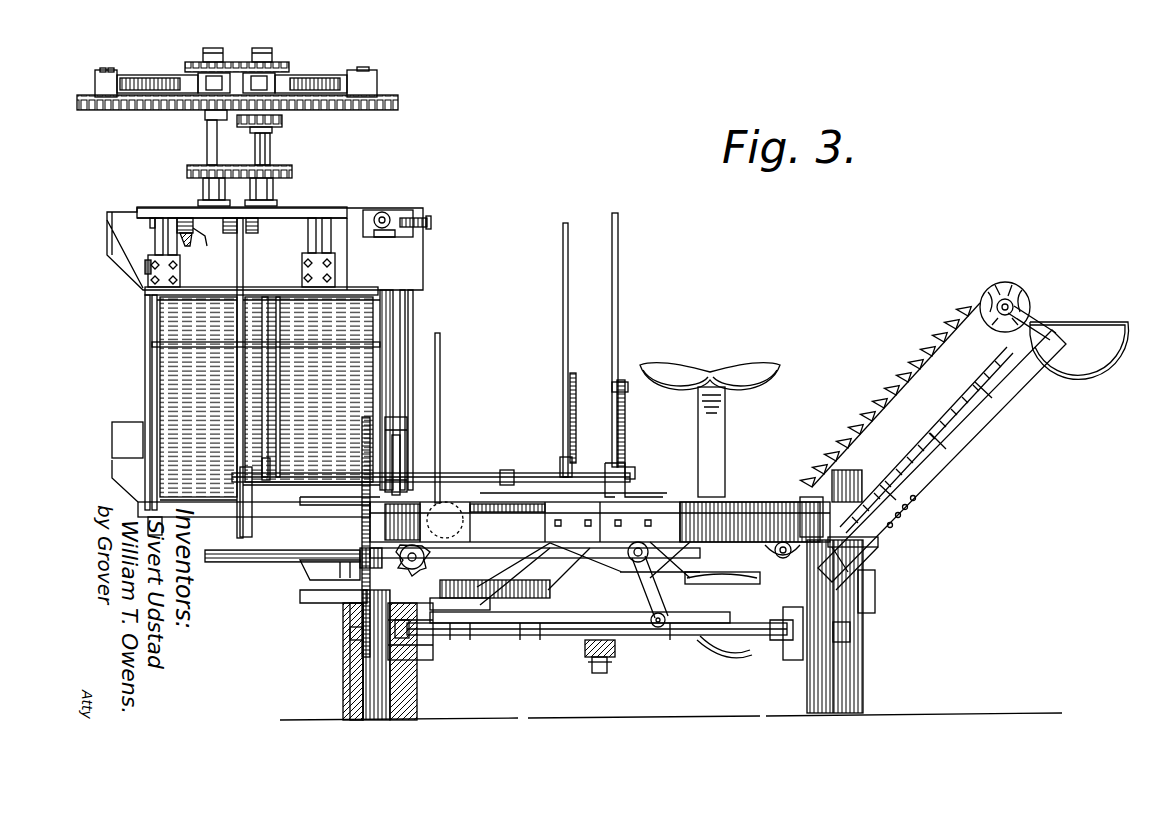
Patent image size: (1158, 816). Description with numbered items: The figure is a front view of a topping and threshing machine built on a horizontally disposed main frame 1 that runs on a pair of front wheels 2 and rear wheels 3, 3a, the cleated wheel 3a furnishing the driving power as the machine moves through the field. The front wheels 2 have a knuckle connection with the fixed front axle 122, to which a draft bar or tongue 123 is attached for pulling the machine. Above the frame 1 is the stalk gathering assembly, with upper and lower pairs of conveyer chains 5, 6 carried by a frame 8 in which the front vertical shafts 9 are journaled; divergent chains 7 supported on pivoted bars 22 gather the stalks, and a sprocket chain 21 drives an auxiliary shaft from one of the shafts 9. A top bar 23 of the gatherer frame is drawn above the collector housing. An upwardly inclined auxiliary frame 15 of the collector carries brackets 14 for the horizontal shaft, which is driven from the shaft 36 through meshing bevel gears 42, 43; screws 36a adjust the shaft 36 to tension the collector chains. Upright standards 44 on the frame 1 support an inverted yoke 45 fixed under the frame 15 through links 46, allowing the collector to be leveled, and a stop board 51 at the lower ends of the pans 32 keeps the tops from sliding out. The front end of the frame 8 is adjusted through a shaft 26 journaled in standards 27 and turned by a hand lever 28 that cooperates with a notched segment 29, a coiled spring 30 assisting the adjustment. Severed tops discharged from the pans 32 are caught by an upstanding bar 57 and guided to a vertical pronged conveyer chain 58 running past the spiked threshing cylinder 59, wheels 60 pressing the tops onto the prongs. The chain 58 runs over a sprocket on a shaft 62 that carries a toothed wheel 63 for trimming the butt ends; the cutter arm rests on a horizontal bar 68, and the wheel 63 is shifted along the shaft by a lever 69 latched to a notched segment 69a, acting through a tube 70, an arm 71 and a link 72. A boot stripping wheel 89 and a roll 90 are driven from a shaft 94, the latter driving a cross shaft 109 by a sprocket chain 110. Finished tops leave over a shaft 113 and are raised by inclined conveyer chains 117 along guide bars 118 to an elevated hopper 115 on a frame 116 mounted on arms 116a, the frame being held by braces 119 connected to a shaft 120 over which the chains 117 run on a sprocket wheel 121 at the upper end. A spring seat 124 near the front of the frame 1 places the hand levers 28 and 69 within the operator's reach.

The main frame 1 is at (731, 502).
The front wheels 2 is at (417, 688).
The rear wheel 3 is at (863, 677).
The cleated driving wheel 3a is at (343, 694).
The upper conveyer chains 5 is at (200, 61).
The lower conveyer chains 6 is at (187, 173).
The divergent conveyer chains 7 is at (140, 111).
The frame 8 is at (200, 144).
The front vertical shafts 9 is at (213, 49).
The brackets 14 is at (149, 263).
The auxiliary frame 15 is at (423, 266).
The sprocket chain 21 is at (282, 124).
The bars 22 is at (161, 66).
The top bar 23 is at (166, 208).
The horizontal shaft 26 is at (630, 471).
The upright standards 27 is at (270, 466).
The hand lever 28 is at (618, 312).
The notched segment 29 is at (626, 421).
The coiled spring 30 is at (360, 432).
The pans 32 is at (413, 311).
The shaft 36 is at (390, 211).
The screws 36a is at (431, 223).
The bevel gear 42 is at (190, 244).
The bevel gear 43 is at (193, 229).
The upright standards 44 is at (374, 390).
The inverted yoke 45 is at (316, 343).
The links 46 is at (378, 367).
The stop board 51 is at (120, 438).
The upstanding bar 57 is at (441, 351).
The conveyer chain 58 is at (546, 548).
The threshing cylinder 59 is at (549, 628).
The wheels 60 is at (470, 474).
The shaft 62 is at (362, 550).
The toothed wheel 63 is at (405, 568).
The horizontal bar 68 is at (448, 590).
The lever 69 is at (563, 302).
The notched segment 69a is at (577, 386).
The tube 70 is at (515, 474).
The arm 71 is at (400, 449).
The link 72 is at (407, 432).
The boot stripping wheel 89 is at (706, 658).
The roll 90 is at (713, 572).
The shaft 94 is at (641, 543).
The cross shaft 109 is at (661, 628).
The sprocket chain 110 is at (648, 618).
The shaft 113 is at (784, 540).
The hopper 115 is at (1100, 322).
The frame 116 is at (982, 456).
The arms 116a is at (880, 549).
The conveyer chains 117 is at (882, 414).
The guide bars 118 is at (947, 440).
The braces 119 is at (914, 513).
The shaft 120 is at (1013, 300).
The conveyor wheel 121 is at (994, 289).
The front axle 122 is at (511, 636).
The draft bar 123 is at (615, 650).
The spring seat 124 is at (781, 368).